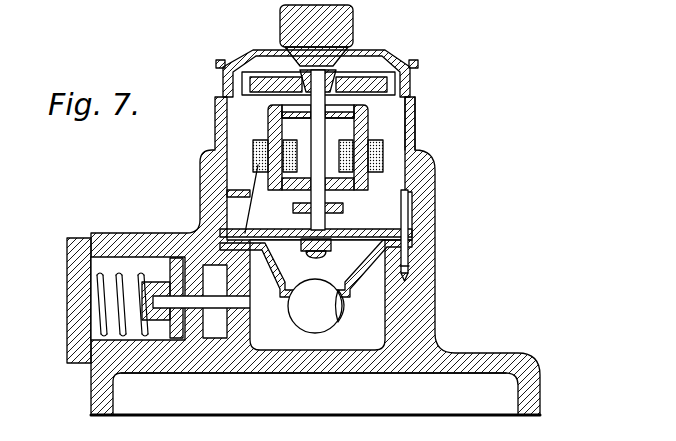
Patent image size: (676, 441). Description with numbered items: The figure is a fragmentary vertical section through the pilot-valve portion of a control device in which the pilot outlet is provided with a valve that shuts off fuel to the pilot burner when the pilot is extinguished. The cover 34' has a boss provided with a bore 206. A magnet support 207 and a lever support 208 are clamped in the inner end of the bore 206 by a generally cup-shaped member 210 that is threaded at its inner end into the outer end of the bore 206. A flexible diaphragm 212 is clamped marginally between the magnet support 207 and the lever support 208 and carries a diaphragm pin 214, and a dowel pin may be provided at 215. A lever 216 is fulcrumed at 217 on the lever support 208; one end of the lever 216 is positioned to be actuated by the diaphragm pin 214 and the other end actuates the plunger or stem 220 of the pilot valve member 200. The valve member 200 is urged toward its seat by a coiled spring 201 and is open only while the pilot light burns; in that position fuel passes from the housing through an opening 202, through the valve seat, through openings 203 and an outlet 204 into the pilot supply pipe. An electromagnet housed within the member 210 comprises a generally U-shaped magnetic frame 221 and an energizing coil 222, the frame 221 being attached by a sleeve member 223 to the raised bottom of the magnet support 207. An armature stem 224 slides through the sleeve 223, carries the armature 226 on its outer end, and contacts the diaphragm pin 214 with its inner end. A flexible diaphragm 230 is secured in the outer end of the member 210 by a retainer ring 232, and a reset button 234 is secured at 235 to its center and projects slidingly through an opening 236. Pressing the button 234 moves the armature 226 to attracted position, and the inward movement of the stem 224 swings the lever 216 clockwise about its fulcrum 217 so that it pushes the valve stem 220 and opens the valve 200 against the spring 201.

The pilot valve member 200 is at (166, 280).
The coiled spring 201 is at (86, 293).
The opening 202 is at (165, 370).
The openings 203 is at (252, 312).
The outlet 204 is at (338, 318).
The bore 206 is at (420, 208).
The magnet support 207 is at (411, 216).
The lever support 208 is at (406, 266).
The cup-shaped member 210 is at (414, 116).
The flexible diaphragm 212 is at (226, 230).
The diaphragm pin 214 is at (347, 292).
The dowel pin 215 is at (405, 258).
The lever 216 is at (315, 306).
The fulcrum 217 is at (215, 256).
The plunger or stem 220 is at (216, 333).
The magnetic frame 221 is at (268, 133).
The energizing coil 222 is at (384, 152).
The sleeve member 223 is at (352, 207).
The armature stem 224 is at (326, 136).
The armature 226 is at (410, 64).
The flexible diaphragm 230 is at (256, 62).
The retainer ring 232 is at (415, 84).
The reset button 234 is at (357, 17).
The securing point 235 is at (283, 48).
The opening 236 is at (362, 52).
The cover 34' is at (328, 380).